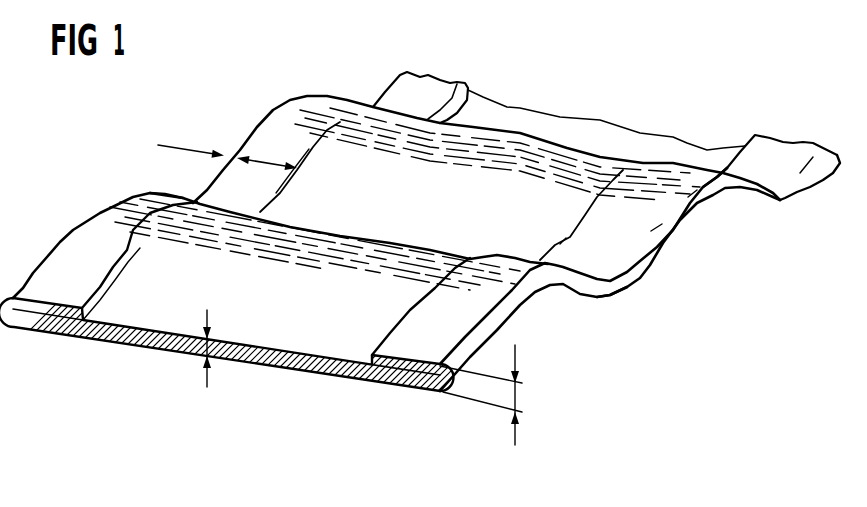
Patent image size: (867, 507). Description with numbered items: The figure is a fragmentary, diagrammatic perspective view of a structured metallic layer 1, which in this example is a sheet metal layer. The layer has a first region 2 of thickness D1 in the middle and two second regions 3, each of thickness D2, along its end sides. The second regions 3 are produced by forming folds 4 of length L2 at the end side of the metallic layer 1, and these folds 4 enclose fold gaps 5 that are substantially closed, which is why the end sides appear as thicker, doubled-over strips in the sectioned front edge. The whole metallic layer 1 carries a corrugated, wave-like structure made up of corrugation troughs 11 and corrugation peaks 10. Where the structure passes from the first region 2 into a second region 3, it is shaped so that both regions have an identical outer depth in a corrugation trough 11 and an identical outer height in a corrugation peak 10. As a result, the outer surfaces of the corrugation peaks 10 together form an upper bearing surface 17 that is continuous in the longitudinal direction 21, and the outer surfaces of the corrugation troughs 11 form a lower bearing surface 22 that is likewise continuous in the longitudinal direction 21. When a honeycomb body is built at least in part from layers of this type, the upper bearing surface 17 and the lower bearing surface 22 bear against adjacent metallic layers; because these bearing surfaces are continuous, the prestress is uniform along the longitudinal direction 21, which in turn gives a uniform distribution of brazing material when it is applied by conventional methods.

The structured metallic layer 1 is at (161, 381).
The first region 2 is at (643, 138).
The second region 3 is at (427, 80).
The fold 4 is at (35, 294).
The fold gap 5 is at (53, 333).
The corrugation peak 10 is at (718, 179).
The corrugation trough 11 is at (610, 297).
The upper bearing surface 17 is at (402, 254).
The longitudinal direction 21 is at (180, 146).
The lower bearing surface 22 is at (807, 194).
The length of the folds L2 is at (268, 160).
The thickness of the first region D1 is at (212, 358).
The thickness of the second regions D2 is at (523, 402).